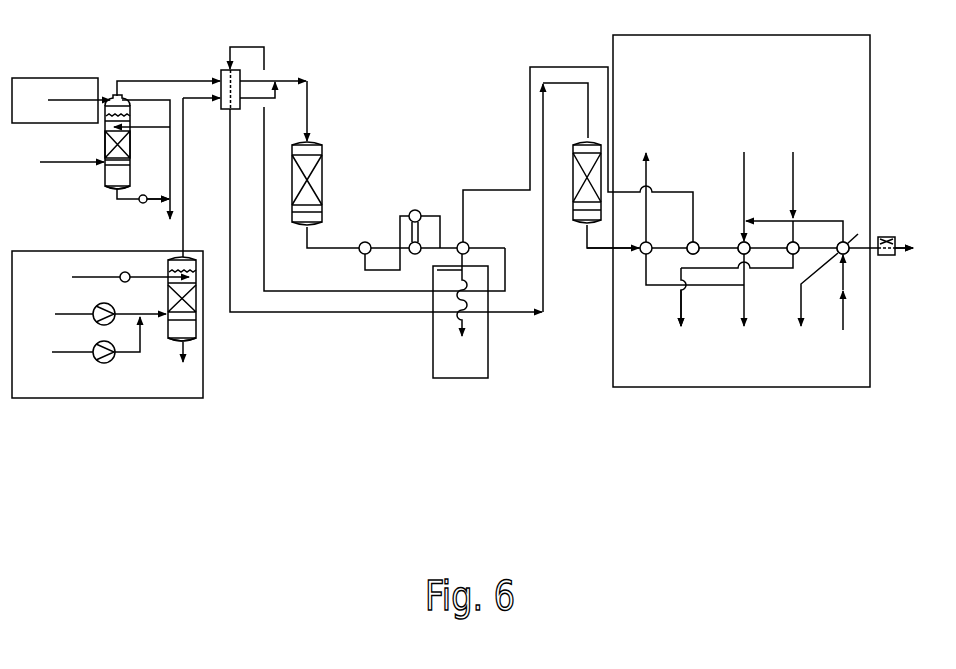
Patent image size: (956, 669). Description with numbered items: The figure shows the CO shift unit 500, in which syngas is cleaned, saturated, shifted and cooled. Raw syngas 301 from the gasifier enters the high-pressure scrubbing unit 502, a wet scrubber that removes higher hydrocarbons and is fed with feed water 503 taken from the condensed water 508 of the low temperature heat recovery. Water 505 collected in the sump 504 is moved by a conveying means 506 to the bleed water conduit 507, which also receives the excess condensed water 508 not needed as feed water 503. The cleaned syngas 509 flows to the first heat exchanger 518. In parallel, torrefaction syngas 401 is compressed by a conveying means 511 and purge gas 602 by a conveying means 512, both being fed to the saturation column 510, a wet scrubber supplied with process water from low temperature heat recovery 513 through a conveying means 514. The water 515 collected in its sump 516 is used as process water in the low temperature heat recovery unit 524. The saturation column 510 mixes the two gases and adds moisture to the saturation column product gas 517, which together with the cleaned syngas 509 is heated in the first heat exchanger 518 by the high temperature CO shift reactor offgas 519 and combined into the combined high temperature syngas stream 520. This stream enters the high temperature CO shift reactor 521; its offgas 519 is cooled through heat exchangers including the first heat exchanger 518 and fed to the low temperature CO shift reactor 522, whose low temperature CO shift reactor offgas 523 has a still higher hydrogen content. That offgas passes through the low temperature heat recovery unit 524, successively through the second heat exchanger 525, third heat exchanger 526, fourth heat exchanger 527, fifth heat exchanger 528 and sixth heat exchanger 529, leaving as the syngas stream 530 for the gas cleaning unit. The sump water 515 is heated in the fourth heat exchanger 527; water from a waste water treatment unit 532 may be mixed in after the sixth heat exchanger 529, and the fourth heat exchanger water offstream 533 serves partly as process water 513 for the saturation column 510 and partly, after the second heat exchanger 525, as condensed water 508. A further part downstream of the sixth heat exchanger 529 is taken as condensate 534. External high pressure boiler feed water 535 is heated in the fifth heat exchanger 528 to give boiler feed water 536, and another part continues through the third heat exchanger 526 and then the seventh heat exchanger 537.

The raw syngas 301 is at (50, 165).
The torrefaction syngas 401 is at (57, 314).
The CO shift unit 500 is at (416, 393).
The high-pressure scrubbing unit 502 is at (104, 143).
The feed water 503 is at (140, 127).
The sump 504 is at (112, 187).
The water 505 is at (117, 191).
The conveying means 506 is at (144, 204).
The bleed water conduit 507 is at (165, 198).
The condensed water 508 is at (72, 100).
The cleaned syngas 509 is at (143, 80).
The saturation column 510 is at (197, 320).
The conveying means 511 is at (100, 325).
The conveying means 512 is at (104, 363).
The process water from low temperature heat recovery 513 is at (745, 317).
The conveying means 514 is at (126, 283).
The water 515 is at (746, 170).
The sump 516 is at (178, 343).
The saturation column product gas 517 is at (183, 188).
The first heat exchanger 518 is at (226, 112).
The high temperature CO shift reactor offgas 519 is at (245, 47).
The combined high temperature syngas stream 520 is at (312, 98).
The high temperature CO shift reactor 521 is at (322, 172).
The low temperature CO shift reactor 522 is at (575, 222).
The low temperature CO shift reactor offgas 523 is at (596, 253).
The low temperature heat recovery unit 524 is at (748, 388).
The second heat exchanger 525 is at (645, 257).
The third heat exchanger 526 is at (695, 241).
The fourth heat exchanger 527 is at (745, 242).
The fifth heat exchanger 528 is at (795, 241).
The sixth heat exchanger 529 is at (845, 242).
The syngas stream 530 is at (900, 240).
The waste water treatment unit 532 is at (886, 256).
The fourth heat exchanger water offstream 533 is at (745, 273).
The condensate 534 is at (802, 317).
The high pressure boiler feed water 535 is at (796, 170).
The boiler feed water 536 is at (683, 330).
The seventh heat exchanger 537 is at (468, 243).
The purge gas 602 is at (75, 352).